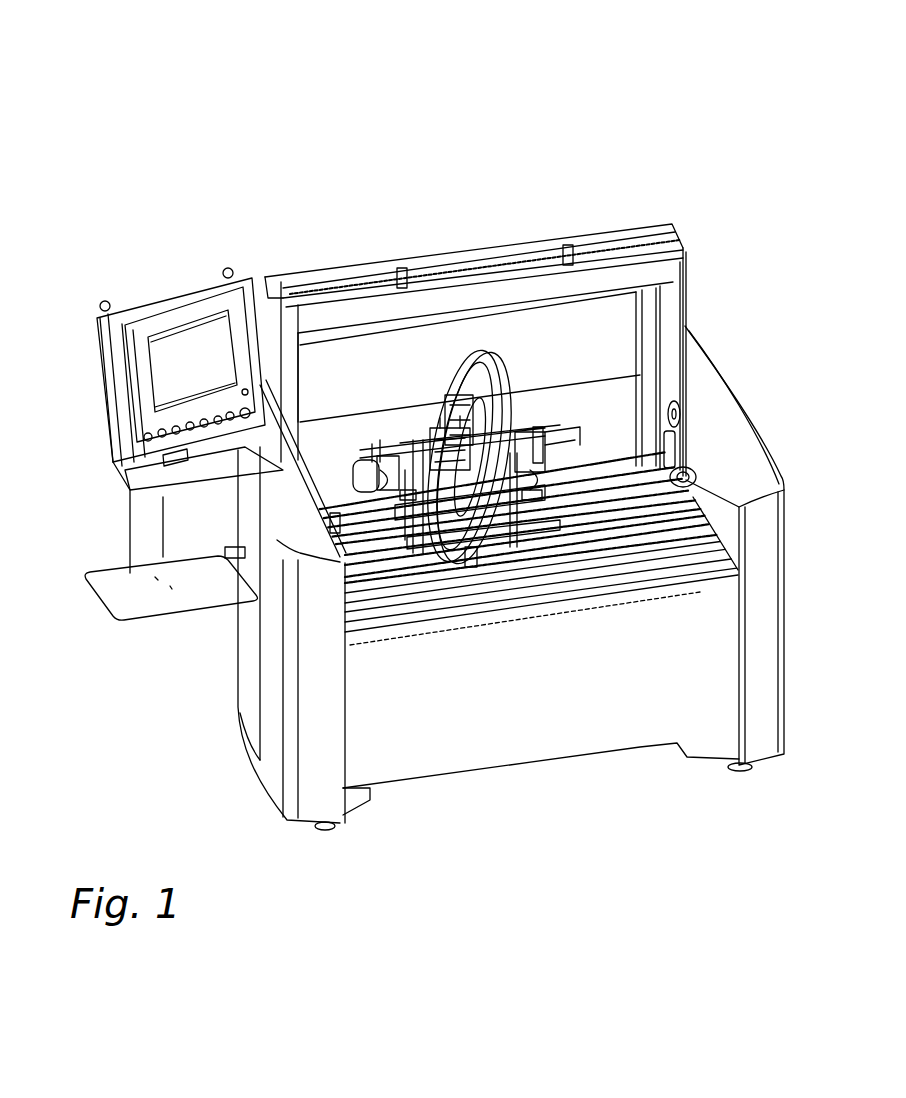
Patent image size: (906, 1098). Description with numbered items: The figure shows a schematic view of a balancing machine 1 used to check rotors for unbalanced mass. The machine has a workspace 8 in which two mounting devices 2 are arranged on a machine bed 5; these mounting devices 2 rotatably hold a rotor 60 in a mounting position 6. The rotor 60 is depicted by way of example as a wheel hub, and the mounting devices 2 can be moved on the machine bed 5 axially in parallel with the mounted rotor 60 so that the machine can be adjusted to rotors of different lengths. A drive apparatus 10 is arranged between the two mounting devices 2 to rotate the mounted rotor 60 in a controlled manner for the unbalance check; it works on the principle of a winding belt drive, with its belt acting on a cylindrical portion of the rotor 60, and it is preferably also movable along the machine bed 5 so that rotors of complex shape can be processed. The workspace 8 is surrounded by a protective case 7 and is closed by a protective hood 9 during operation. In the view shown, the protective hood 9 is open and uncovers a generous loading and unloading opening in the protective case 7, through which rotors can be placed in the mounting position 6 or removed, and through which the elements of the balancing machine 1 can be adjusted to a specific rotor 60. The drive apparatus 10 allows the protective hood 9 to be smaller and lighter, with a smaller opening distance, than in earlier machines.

The balancing machine 1 is at (412, 523).
The mounting devices 2 is at (413, 540).
The machine bed 5 is at (587, 523).
The mounting position 6 is at (423, 393).
The protective case 7 is at (300, 535).
The workspace 8 is at (707, 498).
The protective hood 9 is at (607, 335).
The drive apparatus 10 is at (462, 350).
The rotor 60 is at (480, 430).